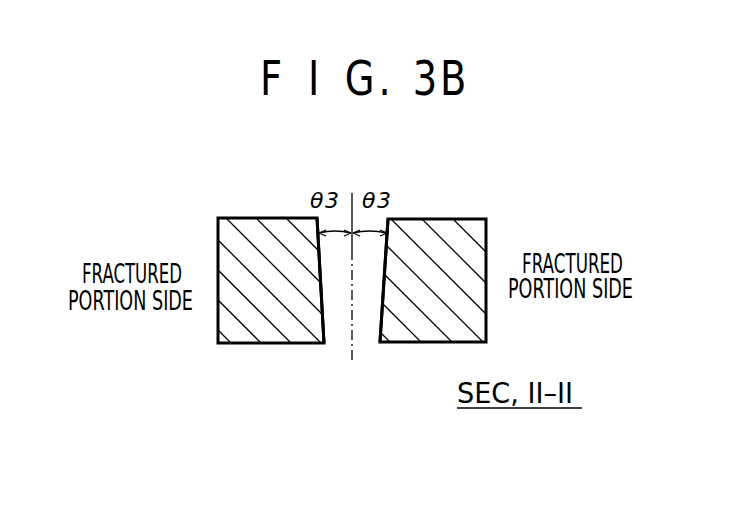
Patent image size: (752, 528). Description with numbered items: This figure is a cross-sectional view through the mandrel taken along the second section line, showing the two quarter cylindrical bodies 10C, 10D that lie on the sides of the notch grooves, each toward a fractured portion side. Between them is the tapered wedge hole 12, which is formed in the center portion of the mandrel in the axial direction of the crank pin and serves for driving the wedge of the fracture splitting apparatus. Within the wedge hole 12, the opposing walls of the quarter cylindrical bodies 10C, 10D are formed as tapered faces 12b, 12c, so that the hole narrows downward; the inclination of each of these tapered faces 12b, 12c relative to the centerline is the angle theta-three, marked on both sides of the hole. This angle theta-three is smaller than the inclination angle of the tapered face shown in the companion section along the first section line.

The quarter cylindrical body 10C is at (276, 230).
The quarter cylindrical body 10D is at (413, 220).
The wedge hole 12 is at (342, 318).
The tapered face 12b is at (326, 313).
The tapered face 12c is at (378, 313).